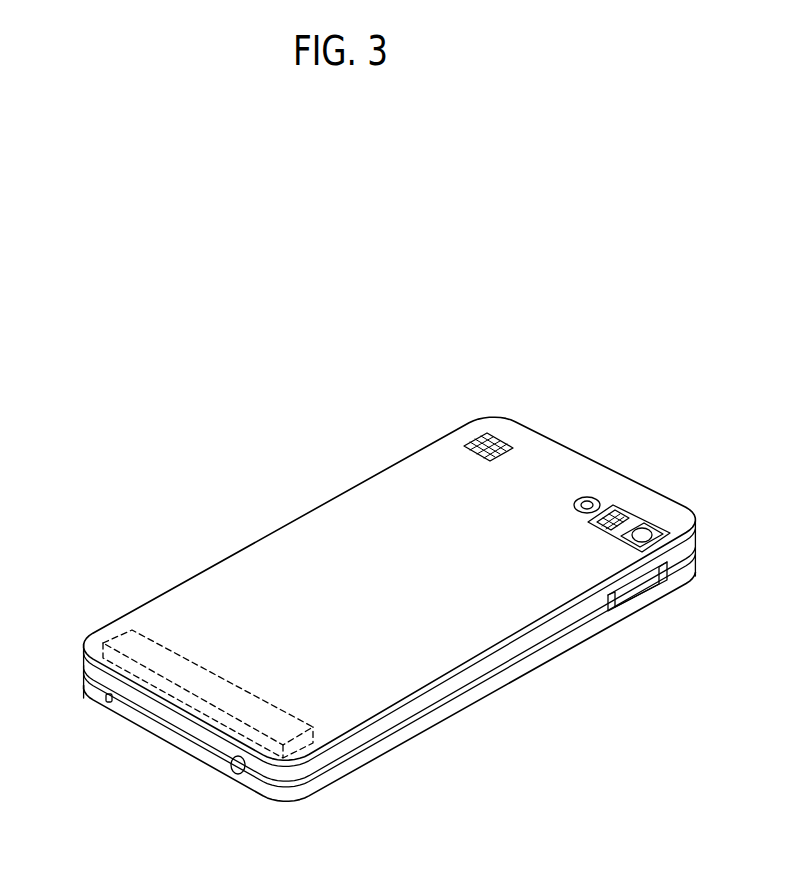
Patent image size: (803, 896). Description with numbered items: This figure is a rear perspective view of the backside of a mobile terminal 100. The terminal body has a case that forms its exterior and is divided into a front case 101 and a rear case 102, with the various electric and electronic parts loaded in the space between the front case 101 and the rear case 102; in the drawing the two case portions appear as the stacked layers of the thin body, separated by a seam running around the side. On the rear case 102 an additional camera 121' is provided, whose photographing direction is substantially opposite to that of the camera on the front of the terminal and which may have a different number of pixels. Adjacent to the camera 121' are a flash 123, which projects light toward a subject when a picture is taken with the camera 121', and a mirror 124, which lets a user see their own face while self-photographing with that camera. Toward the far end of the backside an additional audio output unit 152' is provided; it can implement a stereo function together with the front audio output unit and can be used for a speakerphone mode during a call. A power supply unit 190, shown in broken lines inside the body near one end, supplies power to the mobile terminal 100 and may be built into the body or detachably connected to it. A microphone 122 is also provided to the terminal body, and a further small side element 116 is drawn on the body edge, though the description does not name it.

The mobile terminal 100 is at (324, 472).
The front case 101 is at (270, 790).
The rear case 102 is at (300, 772).
The interface / side key 116 is at (233, 772).
The camera 121' is at (604, 459).
The microphone 122 is at (106, 703).
The flash 123 is at (620, 517).
The mirror 124 is at (640, 530).
The additional audio output unit 152' is at (493, 414).
The power supply unit 190 is at (117, 637).